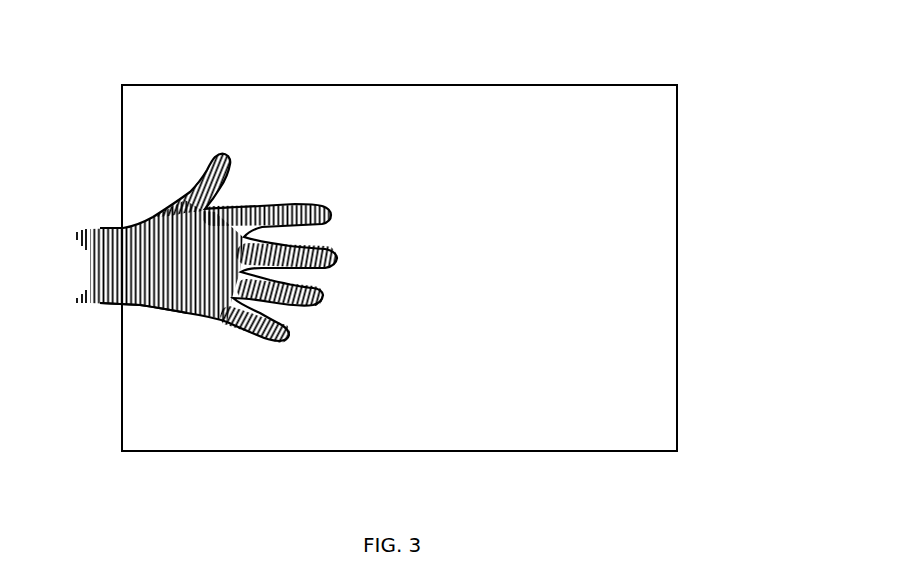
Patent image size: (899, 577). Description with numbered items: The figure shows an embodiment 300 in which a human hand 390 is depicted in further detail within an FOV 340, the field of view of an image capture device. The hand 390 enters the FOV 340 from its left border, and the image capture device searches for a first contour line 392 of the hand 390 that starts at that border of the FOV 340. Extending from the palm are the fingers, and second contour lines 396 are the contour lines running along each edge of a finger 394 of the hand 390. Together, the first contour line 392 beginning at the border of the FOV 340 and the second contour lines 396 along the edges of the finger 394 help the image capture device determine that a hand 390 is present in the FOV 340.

The embodiment 300 is at (761, 94).
The FOV 340 is at (677, 312).
The hand 390 is at (100, 226).
The first contour line 392 is at (140, 308).
The finger 394 is at (328, 212).
The second contour lines 396 is at (296, 206).